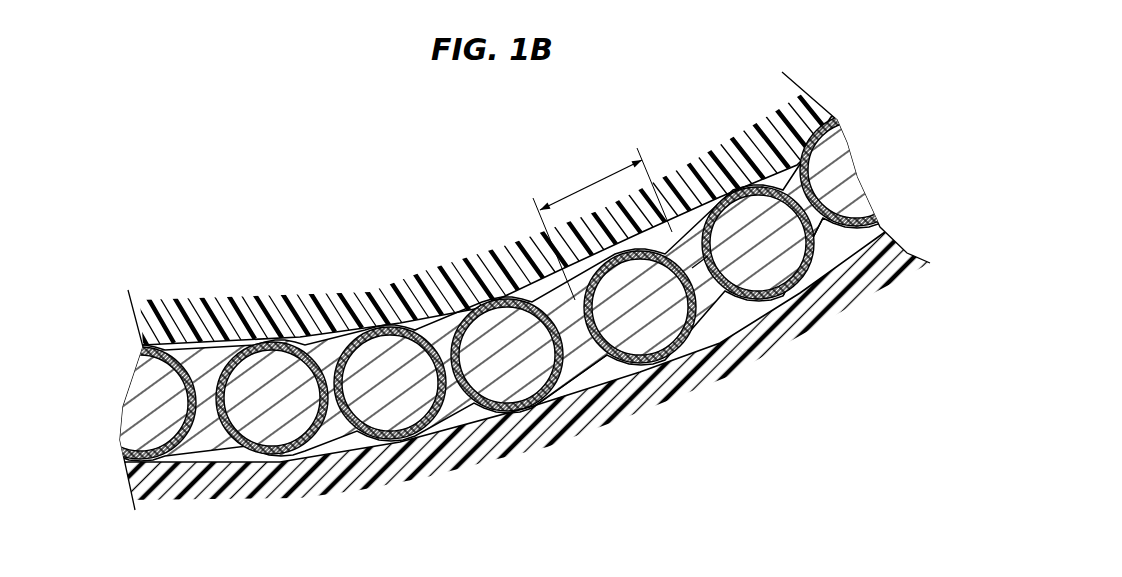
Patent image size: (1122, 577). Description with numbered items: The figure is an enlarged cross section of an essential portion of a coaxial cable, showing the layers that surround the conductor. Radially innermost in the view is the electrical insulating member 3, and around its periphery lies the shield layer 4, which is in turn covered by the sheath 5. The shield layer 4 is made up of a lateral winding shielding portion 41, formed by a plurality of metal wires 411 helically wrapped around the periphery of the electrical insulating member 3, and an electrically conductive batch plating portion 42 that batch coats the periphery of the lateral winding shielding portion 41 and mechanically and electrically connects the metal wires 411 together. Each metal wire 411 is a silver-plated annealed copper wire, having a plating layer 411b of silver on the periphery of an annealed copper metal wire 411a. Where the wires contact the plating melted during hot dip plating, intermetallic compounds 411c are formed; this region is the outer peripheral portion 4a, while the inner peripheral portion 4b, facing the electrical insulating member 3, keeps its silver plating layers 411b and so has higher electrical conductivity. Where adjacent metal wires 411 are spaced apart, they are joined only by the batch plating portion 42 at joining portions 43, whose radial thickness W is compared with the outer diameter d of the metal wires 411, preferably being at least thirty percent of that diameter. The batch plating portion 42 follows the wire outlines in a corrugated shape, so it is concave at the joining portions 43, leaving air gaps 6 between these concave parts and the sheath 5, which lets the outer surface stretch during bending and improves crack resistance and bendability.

The electrical insulating member 3 is at (767, 132).
The shield layer 4 is at (498, 321).
The lateral winding shielding portion 41 is at (498, 286).
The metal wire 411 is at (503, 321).
The metal wire (core) 411a is at (380, 345).
The plating layer 411b is at (342, 336).
The intermetallic compound 411c is at (386, 438).
The batch plating portion 42 is at (688, 258).
The joining portion 43 is at (722, 318).
The outer peripheral portion 4a is at (503, 374).
The inner peripheral portion 4b is at (498, 231).
The sheath 5 is at (862, 270).
The air gap 6 is at (210, 455).
The thickness of the batch plating portion in the joining portion W is at (569, 381).
The outer diameter of the metal wire d is at (602, 224).